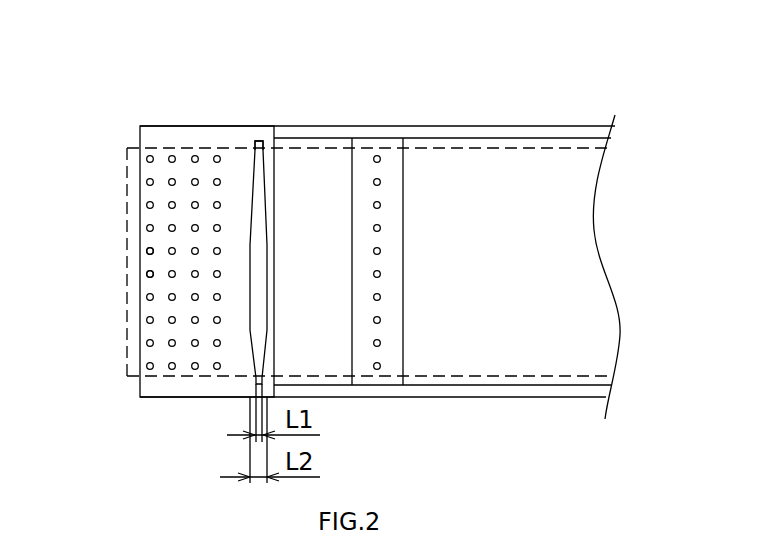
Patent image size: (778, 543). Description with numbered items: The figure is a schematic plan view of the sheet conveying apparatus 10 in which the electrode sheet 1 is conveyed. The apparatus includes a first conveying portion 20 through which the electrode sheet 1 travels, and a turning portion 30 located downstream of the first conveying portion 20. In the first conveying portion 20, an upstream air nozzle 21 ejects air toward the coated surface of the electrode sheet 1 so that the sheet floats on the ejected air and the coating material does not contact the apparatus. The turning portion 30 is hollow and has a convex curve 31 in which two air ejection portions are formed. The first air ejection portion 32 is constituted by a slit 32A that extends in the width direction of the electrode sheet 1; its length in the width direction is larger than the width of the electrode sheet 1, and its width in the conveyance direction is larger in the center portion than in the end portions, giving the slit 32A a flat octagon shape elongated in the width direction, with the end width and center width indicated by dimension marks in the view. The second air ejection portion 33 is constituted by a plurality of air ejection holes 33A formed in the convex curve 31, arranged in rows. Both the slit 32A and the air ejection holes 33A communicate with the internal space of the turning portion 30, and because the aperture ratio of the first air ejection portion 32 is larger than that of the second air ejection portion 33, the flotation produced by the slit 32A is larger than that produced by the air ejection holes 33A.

The electrode sheet 1 is at (526, 150).
The sheet conveying apparatus 10 is at (600, 98).
The first conveying portion 20 is at (443, 127).
The upstream air nozzle 21 is at (403, 245).
The turning portion 30 is at (180, 126).
The convex curve 31 is at (140, 140).
The first air ejection portion 32 is at (259, 136).
The slit 32A is at (257, 153).
The second air ejection portion 33 is at (222, 375).
The air ejection holes 33A is at (146, 273).